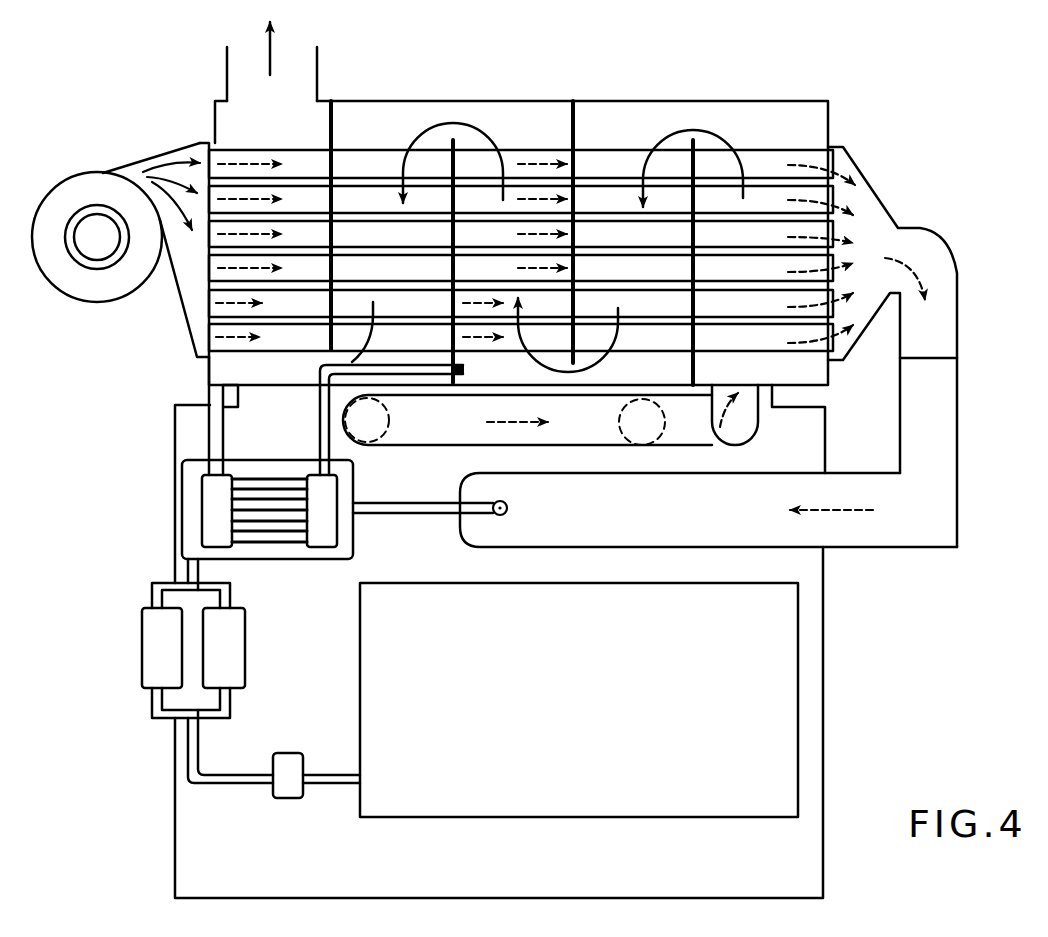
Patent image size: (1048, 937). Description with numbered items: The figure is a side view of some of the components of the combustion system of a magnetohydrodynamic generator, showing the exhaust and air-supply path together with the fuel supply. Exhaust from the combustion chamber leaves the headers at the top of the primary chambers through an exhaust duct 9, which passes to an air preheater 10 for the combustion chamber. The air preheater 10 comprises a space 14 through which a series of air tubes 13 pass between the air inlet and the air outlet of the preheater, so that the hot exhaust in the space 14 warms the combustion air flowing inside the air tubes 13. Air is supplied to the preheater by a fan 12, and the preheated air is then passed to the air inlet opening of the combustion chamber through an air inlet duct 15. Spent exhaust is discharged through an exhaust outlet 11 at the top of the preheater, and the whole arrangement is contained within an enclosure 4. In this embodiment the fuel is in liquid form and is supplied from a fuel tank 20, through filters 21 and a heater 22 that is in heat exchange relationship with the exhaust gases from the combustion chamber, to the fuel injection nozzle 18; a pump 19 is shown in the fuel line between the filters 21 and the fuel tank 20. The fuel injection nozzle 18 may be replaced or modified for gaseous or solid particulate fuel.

The enclosure housing 4 is at (823, 684).
The exhaust duct 9 is at (374, 431).
The air preheater 10 is at (521, 140).
The exhaust stack 11 is at (308, 72).
The fan 12 is at (59, 209).
The air tubes 13 is at (417, 242).
The space 14 is at (721, 138).
The air inlet duct 15 is at (647, 518).
The fuel injection nozzle 18 is at (508, 508).
The pump 19 is at (279, 752).
The fuel tank 20 is at (539, 690).
The filters 21 is at (150, 658).
The heater 22 is at (195, 494).